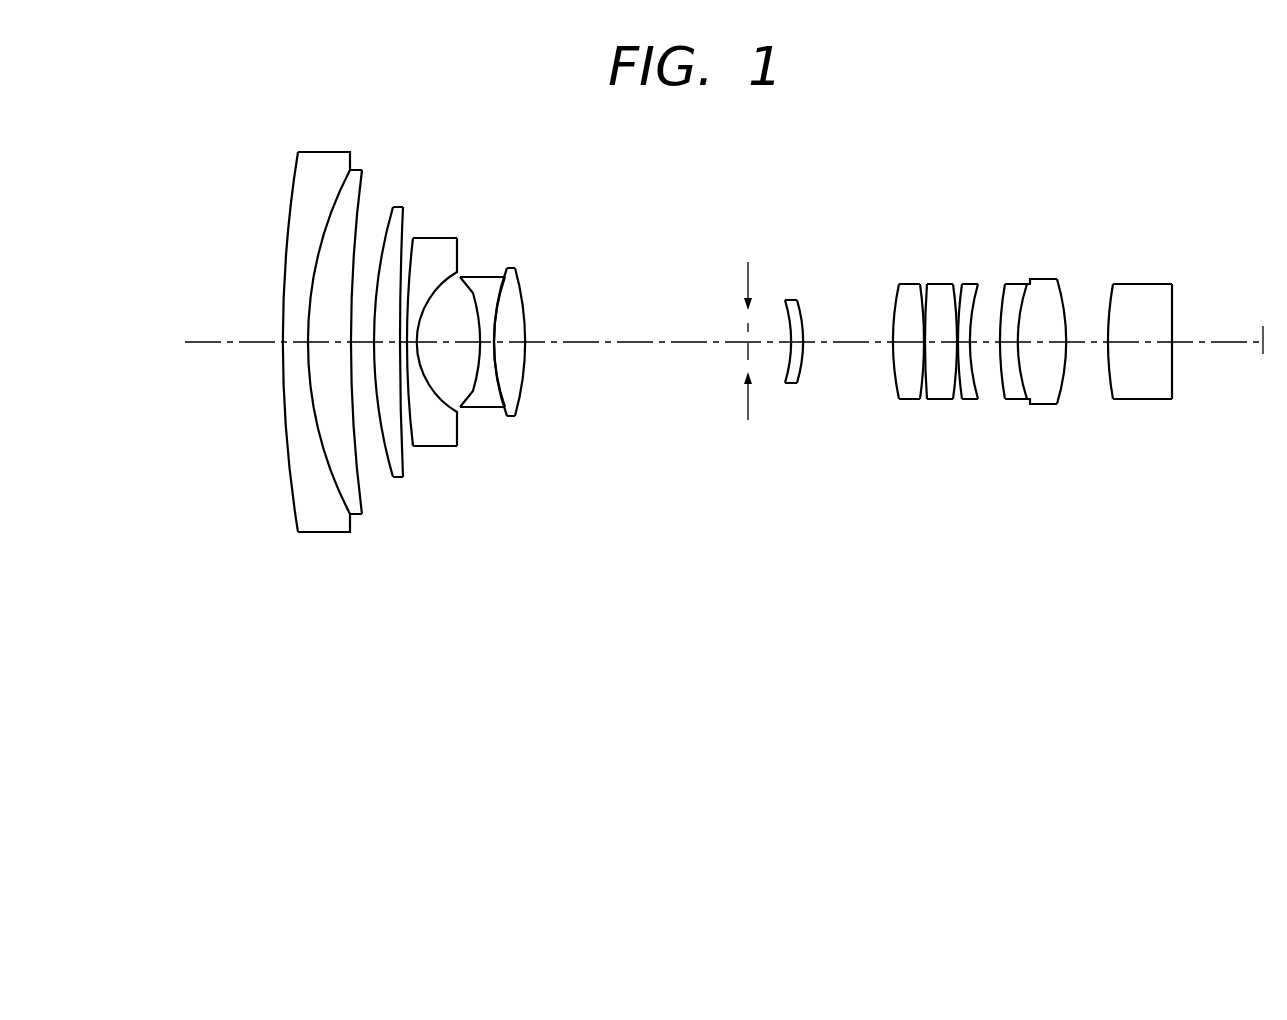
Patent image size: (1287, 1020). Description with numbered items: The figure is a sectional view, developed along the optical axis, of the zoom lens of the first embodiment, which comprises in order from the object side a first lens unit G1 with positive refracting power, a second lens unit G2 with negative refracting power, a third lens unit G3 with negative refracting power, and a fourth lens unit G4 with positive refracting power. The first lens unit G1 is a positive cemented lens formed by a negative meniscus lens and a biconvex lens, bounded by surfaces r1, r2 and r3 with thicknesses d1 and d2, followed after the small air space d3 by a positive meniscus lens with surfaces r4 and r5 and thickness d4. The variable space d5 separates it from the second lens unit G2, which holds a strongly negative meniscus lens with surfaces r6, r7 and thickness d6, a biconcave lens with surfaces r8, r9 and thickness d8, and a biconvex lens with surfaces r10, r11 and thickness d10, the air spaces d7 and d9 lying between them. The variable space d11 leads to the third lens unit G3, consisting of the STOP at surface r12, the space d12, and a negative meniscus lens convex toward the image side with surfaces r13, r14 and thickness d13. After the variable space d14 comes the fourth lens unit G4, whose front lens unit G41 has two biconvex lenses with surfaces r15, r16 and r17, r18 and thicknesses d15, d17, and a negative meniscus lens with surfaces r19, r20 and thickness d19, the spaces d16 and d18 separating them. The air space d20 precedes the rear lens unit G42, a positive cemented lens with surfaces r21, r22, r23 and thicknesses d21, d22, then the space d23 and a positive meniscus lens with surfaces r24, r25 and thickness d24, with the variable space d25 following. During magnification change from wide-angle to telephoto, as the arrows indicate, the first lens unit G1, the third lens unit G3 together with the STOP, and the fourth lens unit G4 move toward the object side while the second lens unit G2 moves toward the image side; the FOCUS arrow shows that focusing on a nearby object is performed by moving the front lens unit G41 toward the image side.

The radius of curvature of first surface r1 is at (290, 192).
The radius of curvature of second surface r2 is at (330, 208).
The radius of curvature of third surface r3 is at (372, 183).
The radius of curvature of fourth surface r4 is at (385, 233).
The radius of curvature of fifth surface r5 is at (407, 223).
The radius of curvature of sixth surface r6 is at (410, 265).
The radius of curvature of seventh surface r7 is at (457, 270).
The radius of curvature of eighth surface r8 is at (473, 293).
The radius of curvature of ninth surface r9 is at (497, 310).
The radius of curvature of tenth surface r10 is at (500, 310).
The radius of curvature of eleventh surface r11 is at (527, 320).
The radius of curvature of twelfth surface r12 is at (748, 268).
The radius of curvature of thirteenth surface r13 is at (786, 306).
The radius of curvature of fourteenth surface r14 is at (798, 306).
The radius of curvature of fifteenth surface r15 is at (895, 303).
The radius of curvature of sixteenth surface r16 is at (917, 300).
The radius of curvature of seventeenth surface r17 is at (927, 297).
The radius of curvature of eighteenth surface r18 is at (957, 298).
The radius of curvature of nineteenth surface r19 is at (965, 298).
The radius of curvature of twentieth surface r20 is at (980, 300).
The radius of curvature of twenty-first surface r21 is at (1005, 302).
The radius of curvature of twenty-second surface r22 is at (1025, 302).
The radius of curvature of twenty-third surface r23 is at (1067, 297).
The radius of curvature of twenty-fourth surface r24 is at (1118, 297).
The radius of curvature of twenty-fifth surface r25 is at (1175, 303).
The thickness of first lens d1 is at (290, 372).
The thickness of second lens d2 is at (316, 402).
The air space between third and fourth surfaces d3 is at (327, 413).
The thickness of positive meniscus lens of first lens unit d4 is at (375, 390).
The variable space between first and second lens units d5 is at (410, 380).
The thickness of negative meniscus lens of second lens unit d6 is at (430, 410).
The air space between seventh and eighth surfaces d7 is at (457, 410).
The thickness of biconcave lens d8 is at (498, 410).
The air space between ninth and tenth surfaces d9 is at (517, 408).
The thickness of biconvex lens of second lens unit d10 is at (513, 348).
The variable space between second lens unit and stop d11 is at (645, 345).
The space between stop and thirteenth surface d12 is at (767, 345).
The thickness of negative meniscus lens of third lens unit d13 is at (800, 347).
The variable space between third and fourth lens units d14 is at (848, 345).
The thickness of first biconvex lens of front lens unit d15 is at (897, 378).
The air space between sixteenth and seventeenth surfaces d16 is at (920, 375).
The thickness of second biconvex lens of front lens unit d17 is at (937, 397).
The air space between eighteenth and nineteenth surfaces d18 is at (956, 378).
The thickness of negative meniscus lens of front lens unit d19 is at (972, 400).
The air space between front and rear lens units d20 is at (997, 390).
The thickness of negative meniscus lens of rear lens unit d21 is at (1013, 397).
The thickness of biconvex lens of rear lens unit d22 is at (1043, 400).
The air space between twenty-third and twenty-fourth surfaces d23 is at (1088, 380).
The thickness of positive meniscus lens of rear lens unit d24 is at (1147, 397).
The variable space behind fourth lens unit d25 is at (1216, 343).
The first lens unit G1 is at (258, 893).
The second lens unit G2 is at (531, 900).
The third lens unit G3 is at (693, 891).
The fourth lens unit G4 is at (1193, 693).
The front lens unit G41 is at (987, 586).
The rear lens unit G42 is at (1193, 586).
The stop STOP is at (748, 420).
The focusing direction FOCUS is at (998, 660).